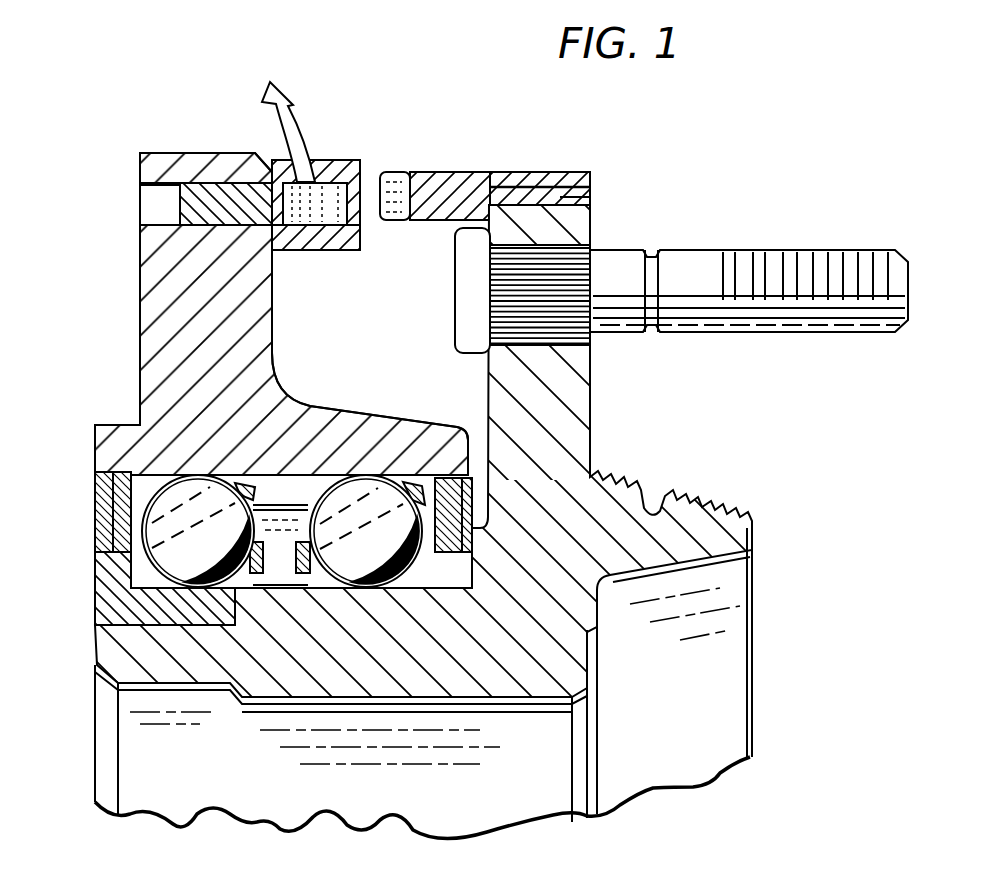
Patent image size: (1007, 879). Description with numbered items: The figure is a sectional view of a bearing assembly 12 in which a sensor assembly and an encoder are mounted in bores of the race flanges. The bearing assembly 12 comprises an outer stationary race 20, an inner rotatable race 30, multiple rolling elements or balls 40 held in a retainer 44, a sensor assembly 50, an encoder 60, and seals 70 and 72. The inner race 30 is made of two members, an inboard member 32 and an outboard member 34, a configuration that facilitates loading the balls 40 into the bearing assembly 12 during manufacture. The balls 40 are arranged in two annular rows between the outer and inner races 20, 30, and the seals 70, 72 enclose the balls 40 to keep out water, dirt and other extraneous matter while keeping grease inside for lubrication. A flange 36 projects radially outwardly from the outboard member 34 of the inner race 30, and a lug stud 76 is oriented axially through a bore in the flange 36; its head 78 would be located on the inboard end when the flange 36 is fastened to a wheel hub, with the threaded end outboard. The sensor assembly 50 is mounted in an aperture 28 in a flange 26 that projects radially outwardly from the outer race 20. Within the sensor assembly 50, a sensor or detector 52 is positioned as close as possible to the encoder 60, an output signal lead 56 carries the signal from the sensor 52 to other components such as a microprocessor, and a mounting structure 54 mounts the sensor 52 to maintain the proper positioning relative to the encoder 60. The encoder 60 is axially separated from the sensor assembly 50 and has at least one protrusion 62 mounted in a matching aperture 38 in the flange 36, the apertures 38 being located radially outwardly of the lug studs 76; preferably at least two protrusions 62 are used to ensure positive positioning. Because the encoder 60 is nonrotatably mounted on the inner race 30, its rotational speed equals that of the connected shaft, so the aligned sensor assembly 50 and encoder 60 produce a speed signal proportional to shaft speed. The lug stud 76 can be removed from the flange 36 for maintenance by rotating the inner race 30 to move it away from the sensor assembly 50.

The bearing assembly 12 is at (442, 120).
The outer stationary race 20 is at (316, 372).
The flange 26 is at (140, 368).
The aperture 28 is at (140, 186).
The inner rotatable race 30 is at (482, 704).
The inboard member 32 is at (107, 590).
The outboard member 34 is at (117, 655).
The flange 36 is at (590, 418).
The aperture 38 is at (593, 200).
The balls 40 is at (237, 500).
The retainer 44 is at (153, 472).
The sensor assembly 50 is at (338, 160).
The sensor 52 is at (360, 240).
The mounting structure 54 is at (186, 206).
The output signal lead 56 is at (283, 106).
The encoder 60 is at (456, 164).
The protrusion 62 is at (537, 190).
The seal 70 is at (96, 500).
The seal 72 is at (474, 528).
The lug stud 76 is at (683, 333).
The head 78 is at (456, 306).